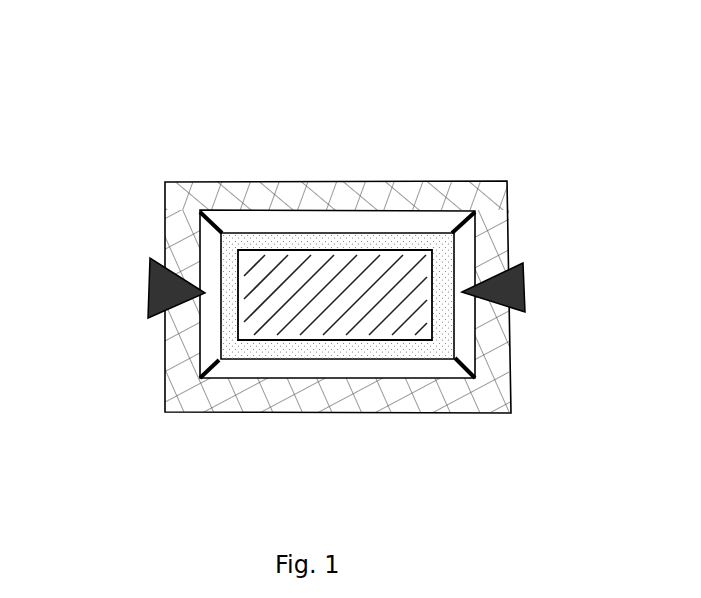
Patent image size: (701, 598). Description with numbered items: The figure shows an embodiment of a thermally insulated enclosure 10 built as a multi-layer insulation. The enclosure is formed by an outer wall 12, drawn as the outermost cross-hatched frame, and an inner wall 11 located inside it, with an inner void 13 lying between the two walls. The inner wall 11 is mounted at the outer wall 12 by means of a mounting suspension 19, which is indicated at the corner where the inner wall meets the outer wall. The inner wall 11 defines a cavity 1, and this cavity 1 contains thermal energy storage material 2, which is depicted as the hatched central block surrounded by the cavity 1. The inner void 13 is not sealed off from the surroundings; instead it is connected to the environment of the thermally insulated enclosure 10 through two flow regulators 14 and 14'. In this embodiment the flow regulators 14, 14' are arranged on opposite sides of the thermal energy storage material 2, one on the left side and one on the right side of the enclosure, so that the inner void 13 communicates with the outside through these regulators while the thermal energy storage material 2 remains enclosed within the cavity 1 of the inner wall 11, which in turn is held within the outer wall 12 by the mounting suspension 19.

The thermally insulated enclosure 10 is at (319, 264).
The outer wall 12 is at (427, 197).
The inner void 13 is at (202, 330).
The mounting suspension 19 is at (218, 228).
The inner wall 11 is at (438, 320).
The cavity 1 is at (257, 340).
The thermal energy storage material 2 is at (351, 318).
The flow regulator 14' is at (116, 258).
The flow regulator 14 is at (536, 268).